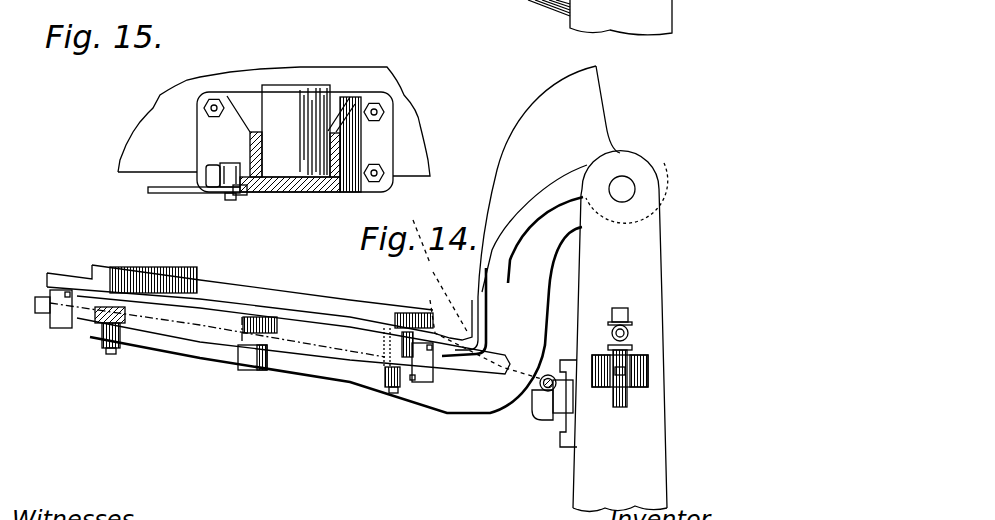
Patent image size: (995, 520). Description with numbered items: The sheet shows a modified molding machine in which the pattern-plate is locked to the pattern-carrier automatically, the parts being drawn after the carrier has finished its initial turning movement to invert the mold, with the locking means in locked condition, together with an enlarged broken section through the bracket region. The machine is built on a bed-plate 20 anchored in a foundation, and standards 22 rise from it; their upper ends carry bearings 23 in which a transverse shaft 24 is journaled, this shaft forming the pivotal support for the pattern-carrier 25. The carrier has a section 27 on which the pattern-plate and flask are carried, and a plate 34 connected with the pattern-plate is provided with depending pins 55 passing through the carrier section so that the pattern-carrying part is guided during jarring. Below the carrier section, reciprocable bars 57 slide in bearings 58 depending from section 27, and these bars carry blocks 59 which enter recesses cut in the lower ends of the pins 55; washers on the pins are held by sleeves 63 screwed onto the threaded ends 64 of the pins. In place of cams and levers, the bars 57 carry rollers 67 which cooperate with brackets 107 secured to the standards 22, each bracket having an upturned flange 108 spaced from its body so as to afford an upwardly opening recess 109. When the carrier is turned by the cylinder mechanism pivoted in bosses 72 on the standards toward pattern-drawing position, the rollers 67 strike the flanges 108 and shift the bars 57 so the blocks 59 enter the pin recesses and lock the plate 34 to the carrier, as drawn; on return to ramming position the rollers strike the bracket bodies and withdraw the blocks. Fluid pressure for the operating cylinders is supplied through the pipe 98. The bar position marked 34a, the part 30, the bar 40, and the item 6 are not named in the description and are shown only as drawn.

In FIG. 15, the bolt 6 is at (231, 190).
In FIG. 15, the bed-plate 20 is at (274, 121).
In FIG. 15, the standards 22 is at (320, 188).
In FIG. 14, the standards 22 is at (648, 293).
In FIG. 14, the bearings 23 is at (630, 183).
In FIG. 14, the shaft 24 is at (622, 180).
In FIG. 14, the pattern-carrier 25 is at (300, 368).
In FIG. 14, the section of the pattern-carrier 27 is at (60, 276).
In FIG. 14, the curved plate 30 is at (605, 88).
In FIG. 14, the plate 34 is at (193, 276).
In FIG. 14, the bar position (dashed) 34a is at (100, 262).
In FIG. 14, the spring bar 40 is at (318, 288).
In FIG. 14, the depending pins 55 is at (118, 300).
In FIG. 15, the reciprocable bars 57 is at (176, 194).
In FIG. 14, the reciprocable bars 57 is at (202, 335).
In FIG. 14, the bearings 58 is at (60, 328).
In FIG. 14, the blocks 59 is at (97, 323).
In FIG. 14, the sleeves 63 is at (112, 349).
In FIG. 14, the threaded ends of the pins 64 is at (108, 352).
In FIG. 14, the rollers 67 is at (550, 373).
In FIG. 15, the bosses 72 is at (289, 90).
In FIG. 14, the pipe 98 is at (630, 334).
In FIG. 15, the brackets 107 is at (246, 187).
In FIG. 14, the brackets 107 is at (566, 428).
In FIG. 15, the upturned flanges 108 is at (206, 172).
In FIG. 14, the upturned flanges 108 is at (530, 400).
In FIG. 15, the upwardly opening recesses 109 is at (221, 164).
In FIG. 14, the upwardly opening recesses 109 is at (548, 412).